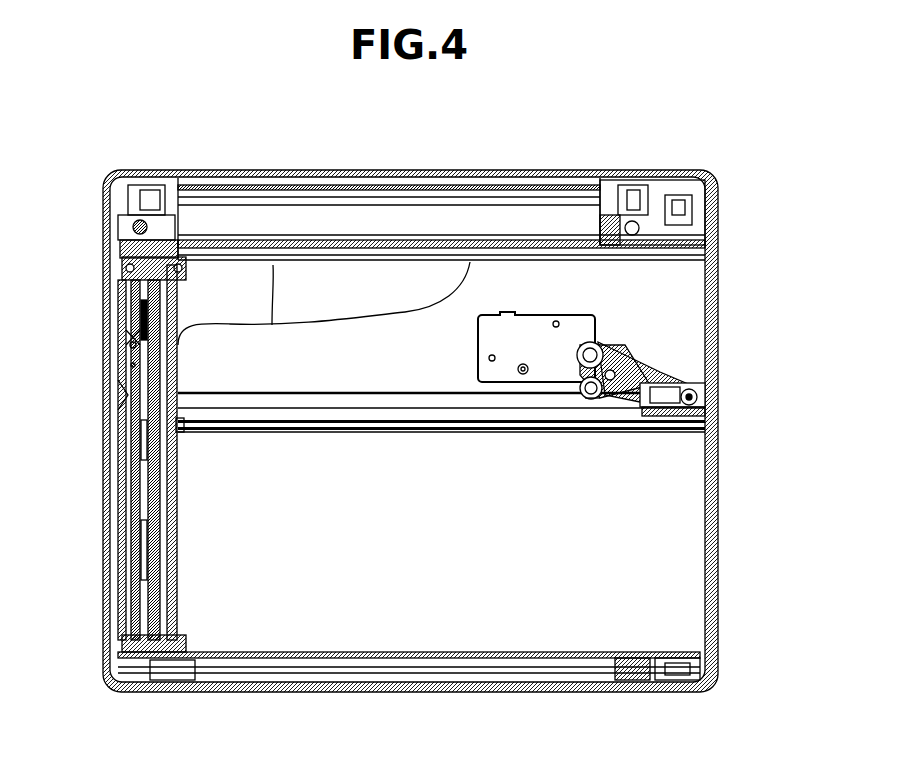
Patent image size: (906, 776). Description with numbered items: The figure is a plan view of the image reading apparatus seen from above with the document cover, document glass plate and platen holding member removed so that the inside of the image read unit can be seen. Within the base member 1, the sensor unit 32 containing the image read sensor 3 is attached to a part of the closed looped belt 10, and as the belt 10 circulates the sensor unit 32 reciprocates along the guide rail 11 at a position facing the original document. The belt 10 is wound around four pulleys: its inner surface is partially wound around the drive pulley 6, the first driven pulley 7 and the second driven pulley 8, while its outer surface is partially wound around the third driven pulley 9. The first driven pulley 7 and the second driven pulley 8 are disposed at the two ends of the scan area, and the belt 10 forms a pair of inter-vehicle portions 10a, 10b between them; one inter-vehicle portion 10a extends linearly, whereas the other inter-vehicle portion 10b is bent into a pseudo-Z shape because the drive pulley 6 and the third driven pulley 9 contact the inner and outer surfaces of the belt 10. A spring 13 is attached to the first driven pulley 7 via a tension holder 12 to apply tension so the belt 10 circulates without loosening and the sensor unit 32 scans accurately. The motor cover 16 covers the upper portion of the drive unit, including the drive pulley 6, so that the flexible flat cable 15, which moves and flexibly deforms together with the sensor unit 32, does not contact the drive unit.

The base member 1 is at (683, 612).
The image read sensor 3 is at (140, 600).
The drive pulley 6 is at (593, 337).
The first driven pulley 7 is at (690, 398).
The second driven pulley 8 is at (128, 395).
The third driven pulley 9 is at (593, 400).
The belt 10 is at (313, 418).
The inter-vehicle portion 10a is at (348, 410).
The inter-vehicle portion 10b is at (392, 393).
The guide rail 11 is at (418, 437).
The tension holder 12 is at (690, 412).
The spring 13 is at (640, 392).
The flexible flat cable 15 is at (273, 265).
The motor cover 16 is at (495, 328).
The sensor unit 32 is at (135, 323).